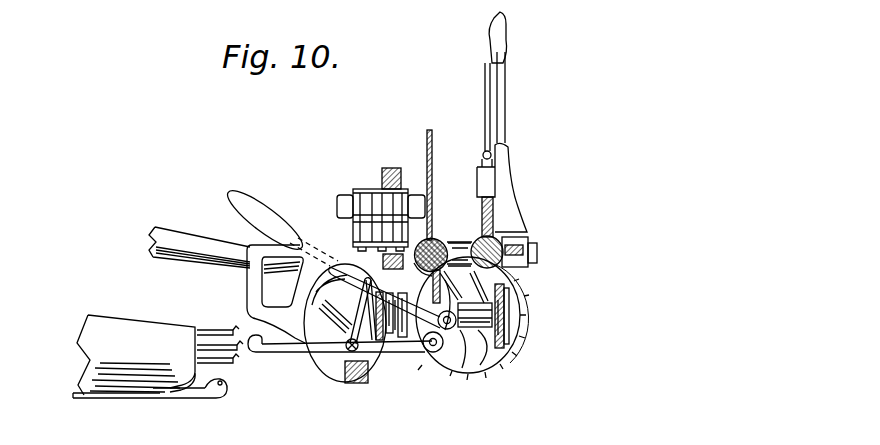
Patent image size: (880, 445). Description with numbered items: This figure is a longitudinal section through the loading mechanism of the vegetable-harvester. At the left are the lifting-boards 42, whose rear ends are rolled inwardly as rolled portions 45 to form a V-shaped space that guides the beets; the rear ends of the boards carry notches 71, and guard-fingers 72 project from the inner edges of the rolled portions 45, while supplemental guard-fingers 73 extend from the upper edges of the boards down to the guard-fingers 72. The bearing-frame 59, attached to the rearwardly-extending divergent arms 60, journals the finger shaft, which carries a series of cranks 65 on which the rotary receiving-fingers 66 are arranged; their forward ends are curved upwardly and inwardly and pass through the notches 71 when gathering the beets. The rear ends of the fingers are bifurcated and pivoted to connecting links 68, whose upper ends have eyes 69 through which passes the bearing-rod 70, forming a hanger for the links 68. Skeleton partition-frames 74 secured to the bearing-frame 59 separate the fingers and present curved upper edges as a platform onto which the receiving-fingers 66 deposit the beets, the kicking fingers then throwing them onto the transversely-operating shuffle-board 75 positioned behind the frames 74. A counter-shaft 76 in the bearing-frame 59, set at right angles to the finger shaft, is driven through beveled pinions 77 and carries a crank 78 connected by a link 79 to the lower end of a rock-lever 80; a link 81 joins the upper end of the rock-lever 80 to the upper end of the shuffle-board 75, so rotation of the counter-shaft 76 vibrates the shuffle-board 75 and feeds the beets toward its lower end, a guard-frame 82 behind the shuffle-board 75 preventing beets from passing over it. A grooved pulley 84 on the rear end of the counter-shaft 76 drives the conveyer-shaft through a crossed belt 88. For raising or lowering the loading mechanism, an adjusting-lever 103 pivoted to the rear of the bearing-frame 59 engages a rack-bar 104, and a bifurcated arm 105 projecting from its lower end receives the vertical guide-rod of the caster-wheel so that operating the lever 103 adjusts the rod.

The lifting-boards 42 is at (96, 368).
The rolled portions 45 is at (153, 380).
The bearing-frame 59 is at (503, 239).
The divergent arms 60 is at (193, 236).
The cranks 65 is at (358, 308).
The rotary receiving-fingers 66 is at (272, 226).
The connecting links 68 is at (465, 240).
The eyes 69 is at (445, 243).
The bearing-rod 70 is at (437, 238).
The notches 71 is at (192, 390).
The guard-fingers 72 is at (214, 396).
The supplemental guard-fingers 73 is at (214, 344).
The skeleton partition-frames 74 is at (255, 303).
The shuffle-board 75 is at (355, 212).
The counter-shaft 76 is at (493, 358).
The beveled pinions 77 is at (380, 342).
The crank 78 is at (397, 340).
The link 79 is at (430, 354).
The rock-lever 80 is at (370, 260).
The link 81 is at (392, 168).
The guard-frame 82 is at (433, 165).
The grooved pulley 84 is at (511, 292).
The crossed belt 88 is at (509, 320).
The adjusting-lever 103 is at (488, 192).
The rack-bar 104 is at (493, 212).
The bifurcated arm 105 is at (538, 252).